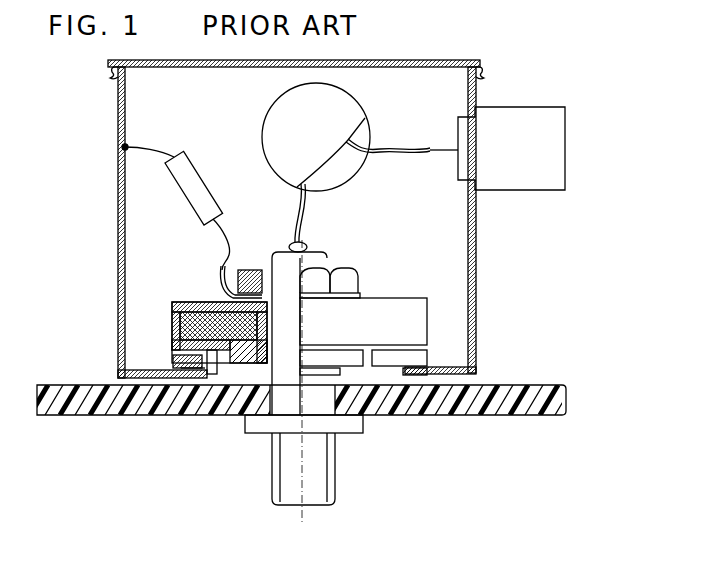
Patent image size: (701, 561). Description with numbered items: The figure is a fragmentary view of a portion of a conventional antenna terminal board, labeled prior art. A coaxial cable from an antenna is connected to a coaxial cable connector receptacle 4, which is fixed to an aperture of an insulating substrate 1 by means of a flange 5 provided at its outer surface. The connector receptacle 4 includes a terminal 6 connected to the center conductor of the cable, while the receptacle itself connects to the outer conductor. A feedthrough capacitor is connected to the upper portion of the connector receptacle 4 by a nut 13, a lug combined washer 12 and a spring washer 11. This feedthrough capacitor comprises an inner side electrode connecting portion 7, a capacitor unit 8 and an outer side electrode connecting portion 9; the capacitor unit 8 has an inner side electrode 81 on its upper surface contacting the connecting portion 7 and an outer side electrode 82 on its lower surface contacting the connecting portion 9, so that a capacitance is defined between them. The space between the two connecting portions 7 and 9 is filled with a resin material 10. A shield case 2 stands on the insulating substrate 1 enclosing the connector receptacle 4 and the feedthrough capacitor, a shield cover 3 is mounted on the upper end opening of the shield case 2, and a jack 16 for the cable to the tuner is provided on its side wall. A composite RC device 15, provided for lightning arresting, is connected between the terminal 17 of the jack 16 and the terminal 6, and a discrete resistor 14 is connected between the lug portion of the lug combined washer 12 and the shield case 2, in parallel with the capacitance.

The insulating substrate 1 is at (97, 407).
The shield case 2 is at (118, 203).
The shield cover 3 is at (181, 70).
The coaxial cable connector receptacle 4 is at (293, 473).
The flange 5 is at (255, 423).
The terminal 6 is at (306, 242).
The inner side electrode connecting portion 7 is at (212, 372).
The capacitor unit 8 is at (185, 336).
The outer side electrode connecting portion 9 is at (175, 318).
The resin material 10 is at (195, 303).
The spring washer 11 is at (175, 361).
The lug combined washer 12 is at (360, 297).
The nut 13 is at (347, 270).
The discrete resistor 14 is at (196, 178).
The composite RC device 15 is at (263, 123).
The jack 16 is at (522, 186).
The terminal 17 is at (444, 153).
The inner side electrode 81 is at (220, 301).
The outer side electrode 82 is at (183, 368).